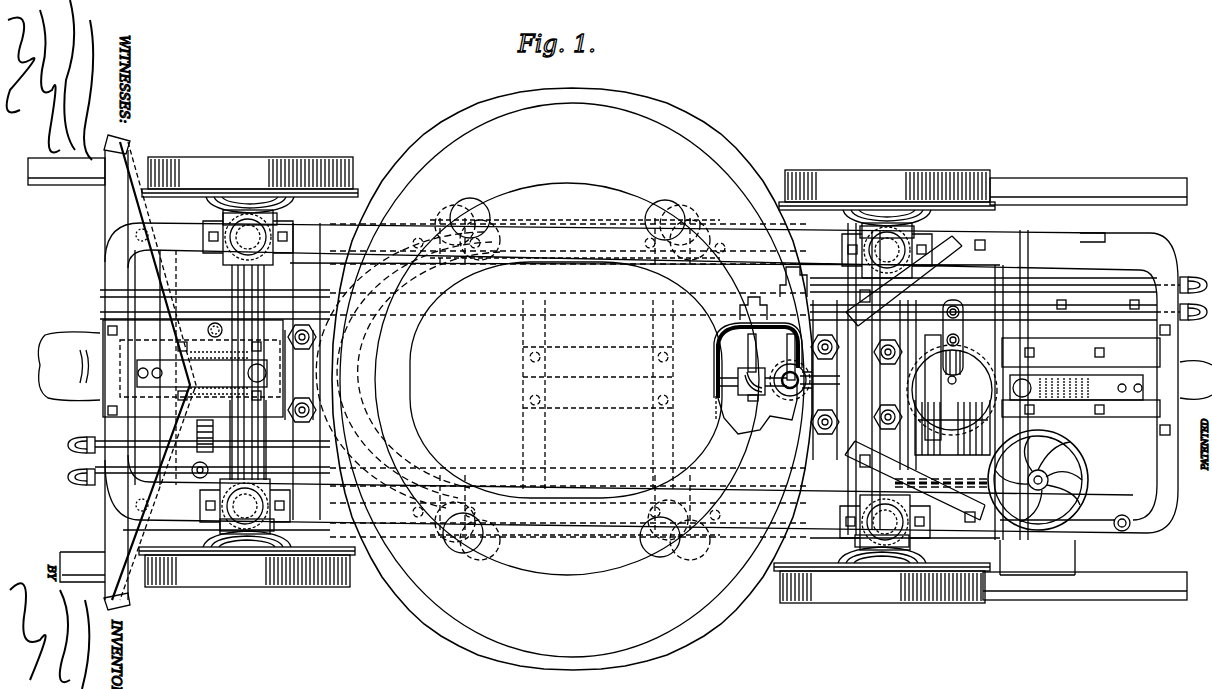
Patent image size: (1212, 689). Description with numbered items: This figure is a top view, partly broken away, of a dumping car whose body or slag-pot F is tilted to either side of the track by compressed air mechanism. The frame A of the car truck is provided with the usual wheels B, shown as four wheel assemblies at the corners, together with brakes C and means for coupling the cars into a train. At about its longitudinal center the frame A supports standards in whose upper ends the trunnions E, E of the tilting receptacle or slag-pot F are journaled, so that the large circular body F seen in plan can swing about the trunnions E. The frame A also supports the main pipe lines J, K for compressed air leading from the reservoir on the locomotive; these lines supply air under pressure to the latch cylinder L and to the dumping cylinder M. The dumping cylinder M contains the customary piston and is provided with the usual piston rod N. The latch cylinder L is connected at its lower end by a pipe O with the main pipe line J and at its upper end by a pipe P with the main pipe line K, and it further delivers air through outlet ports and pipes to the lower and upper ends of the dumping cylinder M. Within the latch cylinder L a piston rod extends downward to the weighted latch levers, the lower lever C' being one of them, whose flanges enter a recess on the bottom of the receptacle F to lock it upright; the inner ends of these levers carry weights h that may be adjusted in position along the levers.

The frame of the car truck A is at (238, 372).
The wheels B is at (243, 153).
The brakes C is at (746, 378).
The housing lower part C' is at (705, 416).
The trunnions E is at (471, 380).
The car body or slag-pot F is at (564, 379).
The main pipe line J is at (626, 382).
The main pipe line K is at (1127, 280).
The latch cylinder L is at (802, 392).
The dumping cylinder M is at (952, 395).
The piston rod N is at (962, 348).
The pipe O is at (743, 353).
The pipe P is at (781, 357).
The weights h is at (752, 397).